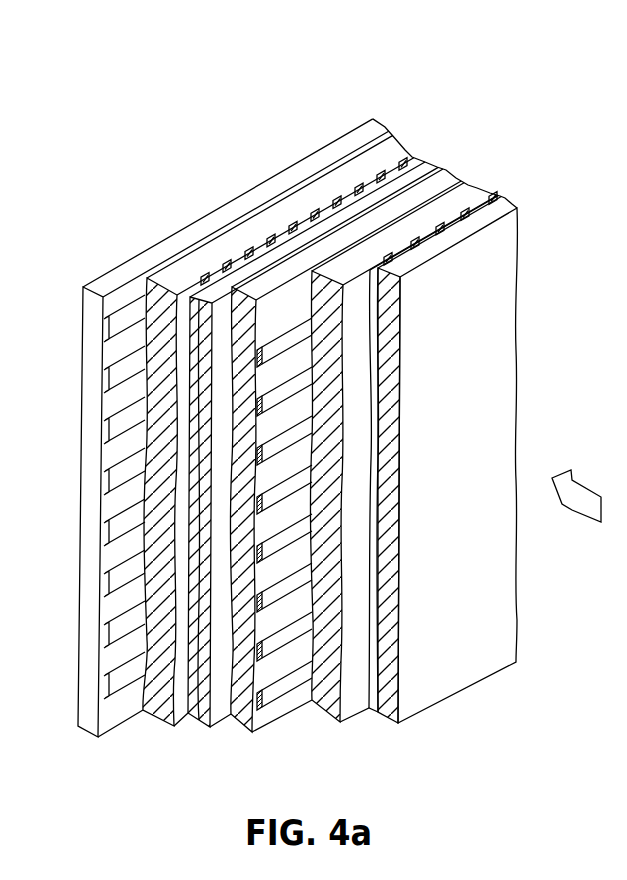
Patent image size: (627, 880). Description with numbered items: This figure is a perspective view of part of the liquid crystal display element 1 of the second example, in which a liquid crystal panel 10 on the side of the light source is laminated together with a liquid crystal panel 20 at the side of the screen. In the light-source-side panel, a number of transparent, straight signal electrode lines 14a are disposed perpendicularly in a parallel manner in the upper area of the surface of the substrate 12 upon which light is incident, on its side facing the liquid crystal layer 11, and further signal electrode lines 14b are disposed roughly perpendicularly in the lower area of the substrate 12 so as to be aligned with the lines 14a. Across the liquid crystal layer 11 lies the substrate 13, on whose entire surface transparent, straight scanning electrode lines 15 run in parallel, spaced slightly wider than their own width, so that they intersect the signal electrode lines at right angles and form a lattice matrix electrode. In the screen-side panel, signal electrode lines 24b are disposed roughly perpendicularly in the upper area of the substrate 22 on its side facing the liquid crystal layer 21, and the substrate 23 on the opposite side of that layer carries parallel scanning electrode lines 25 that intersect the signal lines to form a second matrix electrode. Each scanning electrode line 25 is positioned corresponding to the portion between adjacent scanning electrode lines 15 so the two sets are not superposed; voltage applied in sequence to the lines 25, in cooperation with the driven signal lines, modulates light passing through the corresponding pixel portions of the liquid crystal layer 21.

The liquid crystal display element 1 is at (393, 97).
The liquid crystal panel 10 is at (537, 167).
The liquid crystal layer 11 is at (477, 188).
The substrate 12 is at (510, 207).
The substrate 13 is at (445, 171).
The signal electrode lines 14a is at (413, 270).
The signal electrode lines 14b is at (376, 640).
The scanning electrode lines 15 is at (288, 692).
The liquid crystal panel 20 is at (328, 96).
The liquid crystal layer 21 is at (303, 200).
The substrate 22 is at (360, 205).
The substrate 23 is at (258, 195).
The signal electrode lines 24b is at (249, 252).
The scanning electrode lines 25 is at (110, 483).